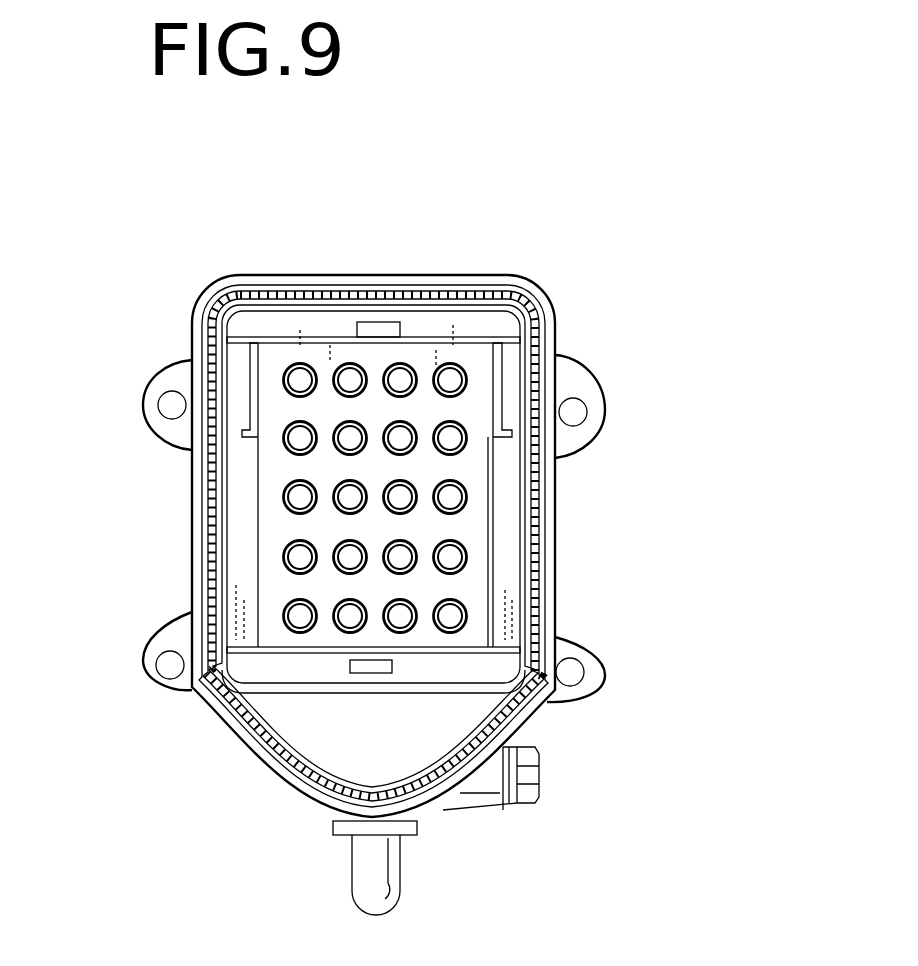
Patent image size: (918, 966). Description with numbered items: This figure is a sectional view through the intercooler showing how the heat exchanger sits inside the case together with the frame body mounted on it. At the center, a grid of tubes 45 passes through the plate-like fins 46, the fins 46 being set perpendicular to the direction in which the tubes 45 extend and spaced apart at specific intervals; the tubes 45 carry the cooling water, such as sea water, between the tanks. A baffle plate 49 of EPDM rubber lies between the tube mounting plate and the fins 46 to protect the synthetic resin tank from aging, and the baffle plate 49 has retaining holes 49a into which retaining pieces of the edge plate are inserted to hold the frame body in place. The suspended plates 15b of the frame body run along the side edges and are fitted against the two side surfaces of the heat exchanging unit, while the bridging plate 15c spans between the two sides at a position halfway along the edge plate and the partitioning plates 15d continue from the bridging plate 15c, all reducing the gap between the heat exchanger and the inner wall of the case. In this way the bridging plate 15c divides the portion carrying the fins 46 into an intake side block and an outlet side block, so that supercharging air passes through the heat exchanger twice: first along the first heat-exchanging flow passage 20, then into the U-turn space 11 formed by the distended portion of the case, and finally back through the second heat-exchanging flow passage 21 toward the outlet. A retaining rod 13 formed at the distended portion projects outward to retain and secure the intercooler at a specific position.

The U-turn space 11 is at (385, 764).
The retaining rod 13 is at (393, 877).
The suspended plate 15b is at (247, 388).
The bridging plate 15c is at (490, 318).
The partitioning plate 15d is at (238, 497).
The first heat-exchanging flow passage 20 is at (430, 528).
The second heat-exchanging flow passage 21 is at (375, 498).
The tube 45 is at (288, 560).
The fin 46 is at (497, 582).
The baffle plate 49 is at (493, 667).
The retaining hole 49a is at (378, 322).